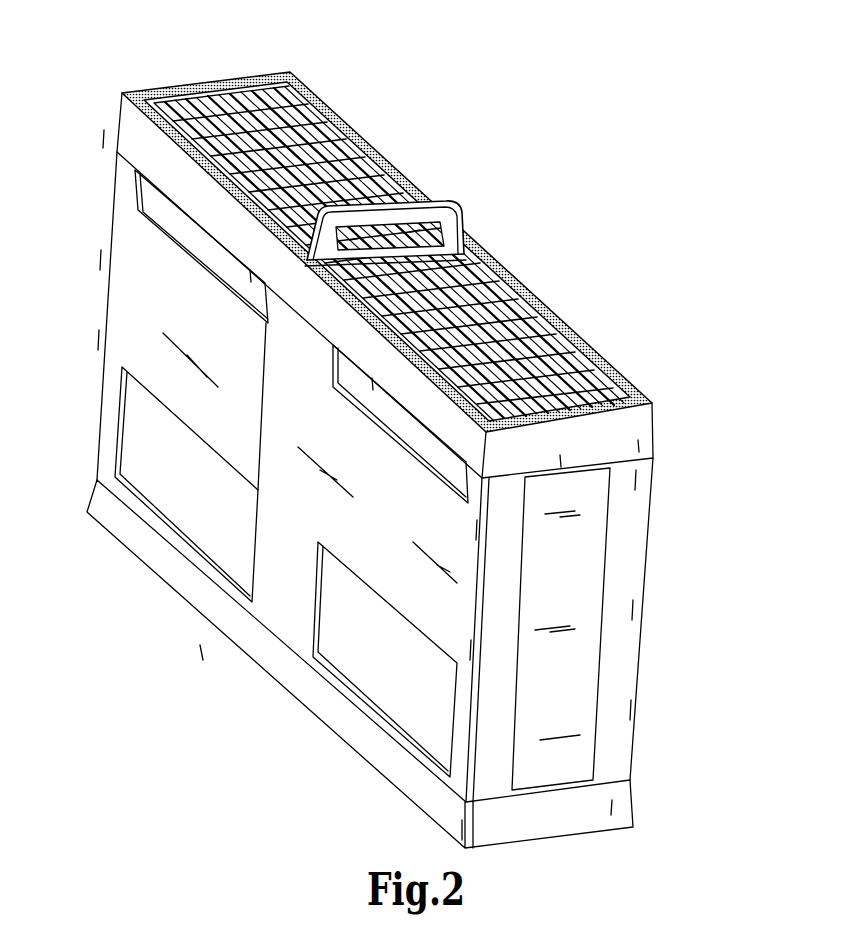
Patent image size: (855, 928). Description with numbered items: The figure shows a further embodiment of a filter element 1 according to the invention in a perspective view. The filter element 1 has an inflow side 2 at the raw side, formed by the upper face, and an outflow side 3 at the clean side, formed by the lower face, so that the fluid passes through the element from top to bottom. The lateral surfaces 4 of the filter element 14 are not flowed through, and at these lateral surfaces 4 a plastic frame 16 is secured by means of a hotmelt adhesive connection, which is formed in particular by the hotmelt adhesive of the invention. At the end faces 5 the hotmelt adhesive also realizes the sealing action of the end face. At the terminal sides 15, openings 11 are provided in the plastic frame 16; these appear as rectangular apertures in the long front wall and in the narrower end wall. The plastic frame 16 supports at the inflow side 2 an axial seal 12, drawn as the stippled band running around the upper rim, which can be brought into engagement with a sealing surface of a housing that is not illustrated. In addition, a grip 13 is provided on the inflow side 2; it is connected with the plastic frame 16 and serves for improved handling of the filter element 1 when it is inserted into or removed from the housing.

The filter element 1 is at (381, 424).
The inflow side 2 is at (387, 216).
The outflow side 3 is at (358, 752).
The lateral surfaces 4 is at (148, 301).
The end faces 5 is at (581, 562).
The openings 11 is at (158, 209).
The axial seal 12 is at (176, 86).
The grip 13 is at (385, 195).
The filter element 14 is at (261, 102).
The terminal sides 15 is at (147, 347).
The plastic frame 16 is at (655, 477).